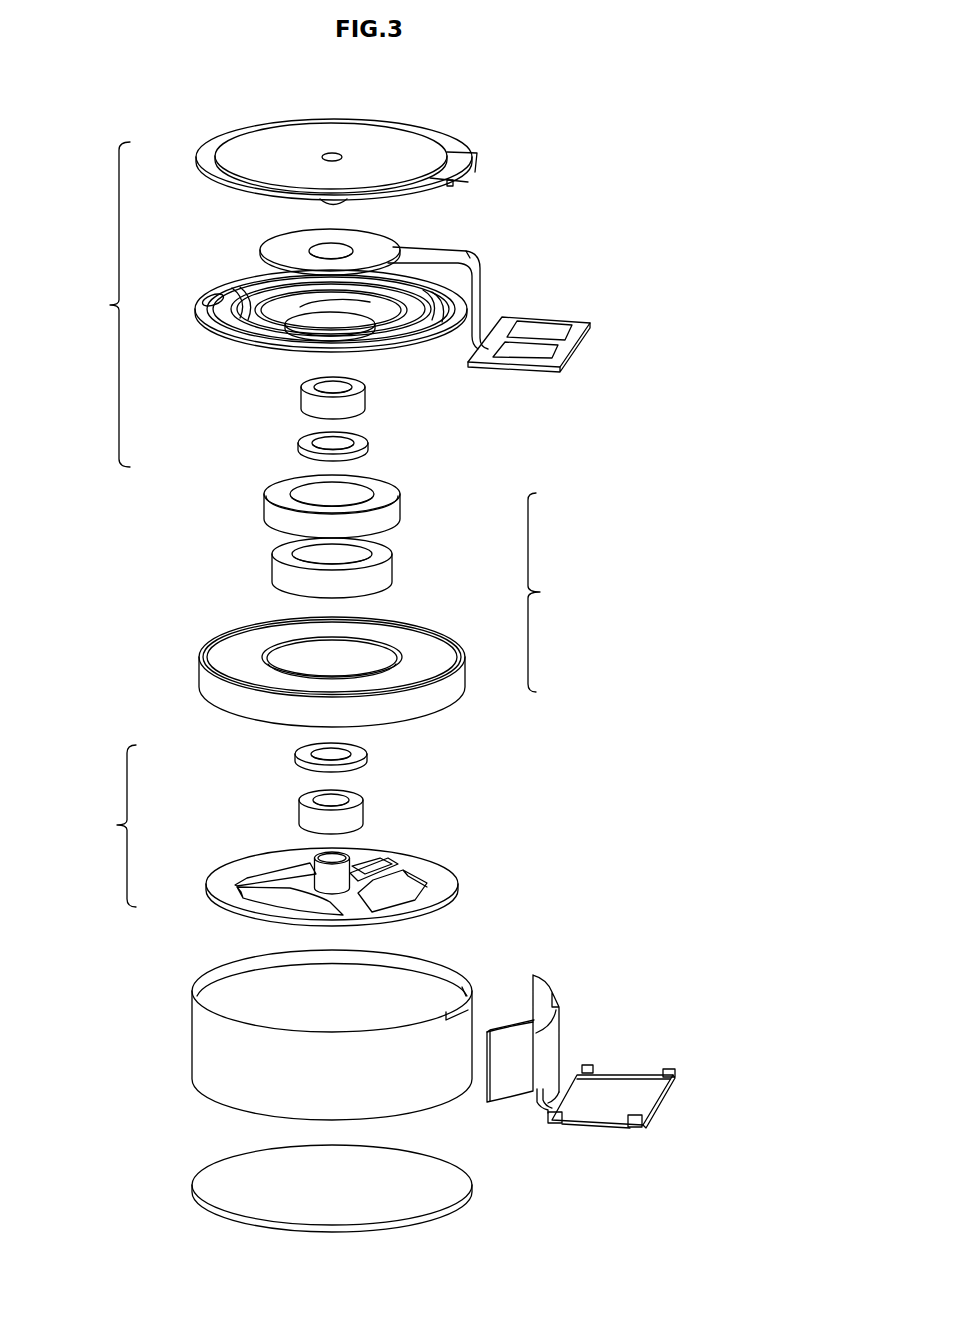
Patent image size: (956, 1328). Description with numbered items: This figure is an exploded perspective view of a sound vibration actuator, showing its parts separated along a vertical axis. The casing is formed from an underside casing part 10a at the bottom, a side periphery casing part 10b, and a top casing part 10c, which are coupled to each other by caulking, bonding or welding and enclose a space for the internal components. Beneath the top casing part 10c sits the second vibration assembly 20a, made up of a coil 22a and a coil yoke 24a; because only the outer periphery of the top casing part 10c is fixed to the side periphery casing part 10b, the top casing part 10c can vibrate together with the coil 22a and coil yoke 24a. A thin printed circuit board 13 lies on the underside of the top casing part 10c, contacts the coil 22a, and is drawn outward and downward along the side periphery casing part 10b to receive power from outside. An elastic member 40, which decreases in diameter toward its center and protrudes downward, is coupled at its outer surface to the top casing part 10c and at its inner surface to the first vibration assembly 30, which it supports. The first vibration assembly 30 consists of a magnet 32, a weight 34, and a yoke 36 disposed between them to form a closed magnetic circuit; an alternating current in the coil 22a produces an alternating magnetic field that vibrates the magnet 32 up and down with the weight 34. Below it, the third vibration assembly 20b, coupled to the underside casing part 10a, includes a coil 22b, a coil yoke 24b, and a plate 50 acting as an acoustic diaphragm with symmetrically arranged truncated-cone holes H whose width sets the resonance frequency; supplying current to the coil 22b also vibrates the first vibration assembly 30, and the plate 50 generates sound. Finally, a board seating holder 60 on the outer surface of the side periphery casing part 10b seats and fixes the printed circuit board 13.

The underside casing part 10a is at (192, 1194).
The side periphery casing part 10b is at (192, 1038).
The top casing part 10c is at (196, 165).
The printed circuit board 13 is at (480, 290).
The second vibration assembly 20a is at (99, 304).
The coil 22a is at (300, 406).
The coil yoke 24a is at (298, 452).
The elastic member 40 is at (405, 350).
The first vibration assembly 30 is at (551, 592).
The magnet 32 is at (393, 566).
The weight 34 is at (465, 670).
The yoke 36 is at (400, 512).
The third vibration assembly 20b is at (105, 826).
The coil 22b is at (298, 812).
The coil yoke 24b is at (295, 764).
The plate 50 is at (207, 893).
The hole H is at (408, 892).
The board seating holder 60 is at (562, 1033).